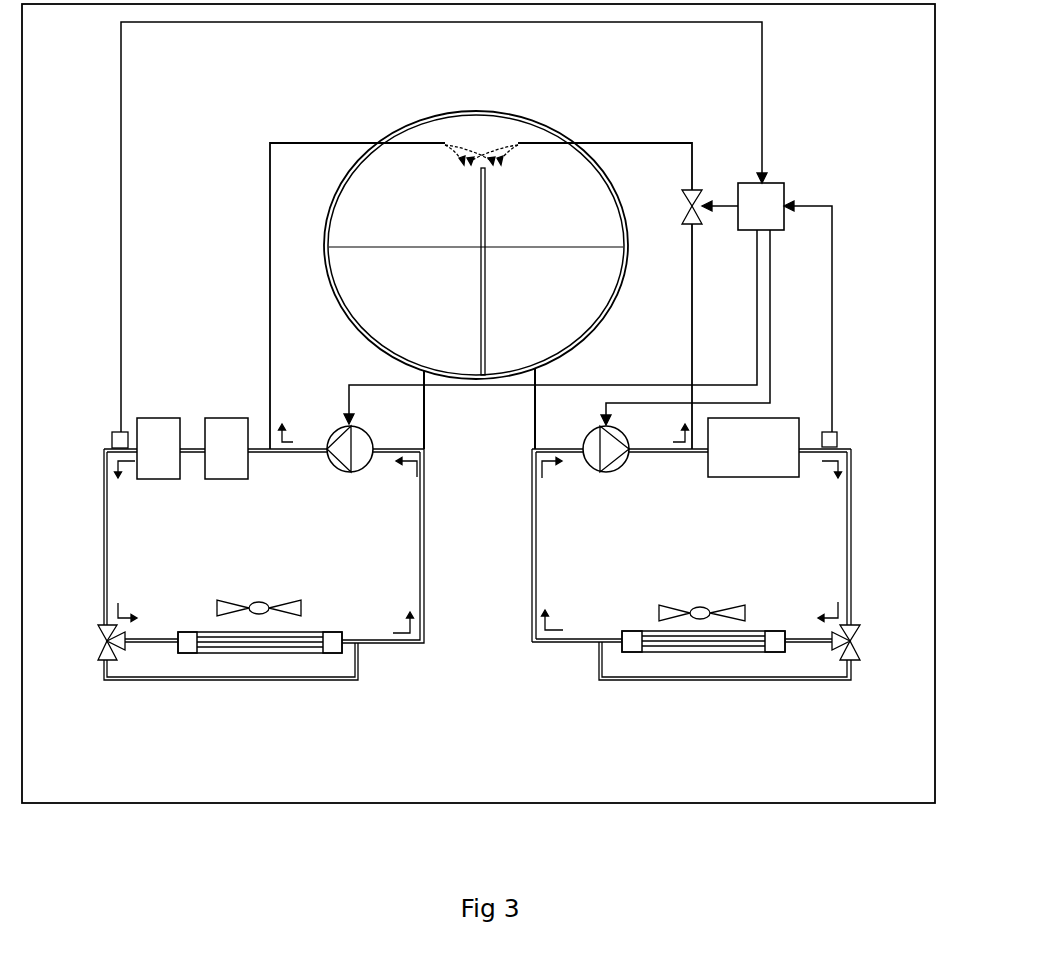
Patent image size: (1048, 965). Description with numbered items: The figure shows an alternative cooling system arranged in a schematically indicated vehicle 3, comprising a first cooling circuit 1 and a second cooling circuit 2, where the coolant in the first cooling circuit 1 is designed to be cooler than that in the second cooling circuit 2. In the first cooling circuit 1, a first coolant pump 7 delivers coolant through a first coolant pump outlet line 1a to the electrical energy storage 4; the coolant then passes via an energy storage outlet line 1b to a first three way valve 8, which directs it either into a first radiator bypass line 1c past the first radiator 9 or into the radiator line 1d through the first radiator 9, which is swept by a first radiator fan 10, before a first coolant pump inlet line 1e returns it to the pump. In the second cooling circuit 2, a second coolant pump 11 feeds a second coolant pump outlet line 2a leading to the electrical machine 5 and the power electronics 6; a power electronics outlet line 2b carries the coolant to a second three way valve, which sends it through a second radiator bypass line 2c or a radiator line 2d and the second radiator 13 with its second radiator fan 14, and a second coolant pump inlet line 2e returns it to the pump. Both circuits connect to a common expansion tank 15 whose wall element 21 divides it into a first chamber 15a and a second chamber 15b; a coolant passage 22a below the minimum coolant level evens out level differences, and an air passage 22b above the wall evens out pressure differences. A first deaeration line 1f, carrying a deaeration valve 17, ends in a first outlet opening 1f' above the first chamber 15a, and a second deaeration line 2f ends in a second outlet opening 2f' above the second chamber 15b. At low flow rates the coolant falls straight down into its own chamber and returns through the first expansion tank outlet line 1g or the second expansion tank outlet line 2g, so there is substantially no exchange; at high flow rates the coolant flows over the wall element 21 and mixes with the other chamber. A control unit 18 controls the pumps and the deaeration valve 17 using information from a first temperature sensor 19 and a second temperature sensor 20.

The first cooling circuit 1 is at (719, 524).
The first coolant pump outlet line 1a is at (646, 453).
The energy storage outlet line 1b is at (850, 556).
The first radiator bypass line 1c is at (718, 683).
The radiator line 1d is at (618, 639).
The first coolant pump inlet line 1e is at (537, 566).
The first deaeration line 1f is at (608, 265).
The first outlet opening 1f' is at (541, 175).
The first expansion tank outlet line 1g is at (534, 431).
The second cooling circuit 2 is at (234, 535).
The second coolant pump outlet line 2a is at (315, 457).
The power electronics outlet line 2b is at (104, 573).
The second radiator bypass line 2c is at (152, 683).
The radiator line 2d is at (160, 639).
The second coolant pump inlet line 2e is at (419, 566).
The second deaeration line 2f is at (329, 296).
The second outlet opening 2f' is at (418, 175).
The second expansion tank outlet line 2g is at (425, 431).
The vehicle 3 is at (62, 87).
The electrical energy storage 4 is at (745, 460).
The electrical machine 5 is at (228, 463).
The power electronics 6 is at (158, 463).
The first coolant pump 7 is at (600, 455).
The first three way valve 8 is at (858, 644).
The first radiator 9 is at (672, 645).
The first radiator fan 10 is at (703, 606).
The second coolant pump 11 is at (340, 455).
The second radiator 13 is at (262, 645).
The second radiator fan 14 is at (258, 603).
The expansion tank 15 is at (492, 228).
The first chamber 15a is at (572, 307).
The second chamber 15b is at (398, 318).
The deaeration valve 17 is at (696, 222).
The control unit 18 is at (766, 202).
The first temperature sensor 19 is at (840, 438).
The second temperature sensor 20 is at (112, 440).
The wall element 21 is at (479, 233).
The coolant passage 22a is at (480, 311).
The air passage 22b is at (482, 140).